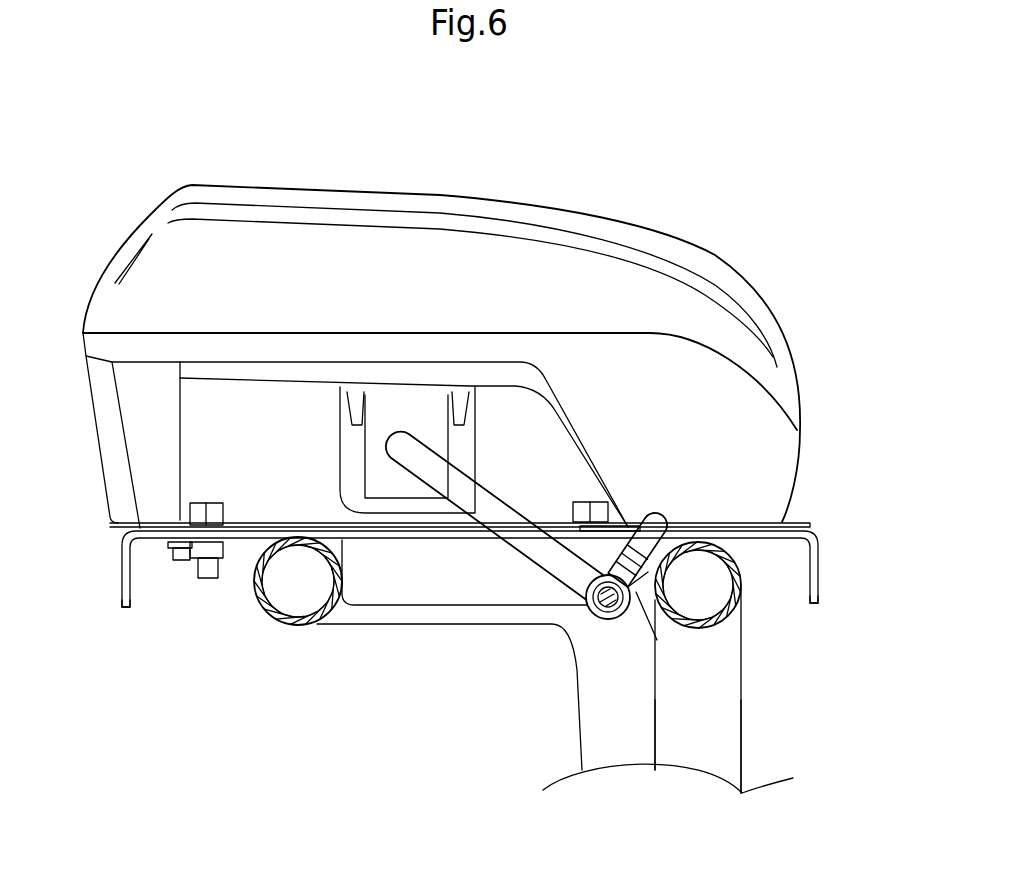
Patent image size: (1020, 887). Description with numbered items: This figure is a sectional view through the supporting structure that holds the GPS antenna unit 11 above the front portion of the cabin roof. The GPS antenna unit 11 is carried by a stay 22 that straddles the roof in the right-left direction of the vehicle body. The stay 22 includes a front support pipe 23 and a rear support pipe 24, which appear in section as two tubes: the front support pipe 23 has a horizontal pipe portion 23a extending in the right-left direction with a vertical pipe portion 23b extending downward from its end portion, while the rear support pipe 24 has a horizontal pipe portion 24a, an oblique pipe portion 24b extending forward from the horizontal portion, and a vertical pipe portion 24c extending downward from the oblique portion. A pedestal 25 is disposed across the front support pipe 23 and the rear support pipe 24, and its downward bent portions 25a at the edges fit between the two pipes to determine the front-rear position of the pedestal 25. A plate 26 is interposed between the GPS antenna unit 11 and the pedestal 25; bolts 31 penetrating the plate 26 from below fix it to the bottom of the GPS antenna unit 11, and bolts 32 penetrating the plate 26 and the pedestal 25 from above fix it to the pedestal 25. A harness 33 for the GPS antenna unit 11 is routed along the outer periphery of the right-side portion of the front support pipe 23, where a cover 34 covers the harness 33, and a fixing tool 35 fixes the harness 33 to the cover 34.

The GPS antenna unit 11 is at (385, 245).
The stay 22 is at (768, 724).
The front support pipe 23 is at (755, 702).
The horizontal pipe portion 23a is at (707, 583).
The vertical pipe portion 23b is at (690, 757).
The rear support pipe 24 is at (414, 655).
The horizontal pipe portion 24a is at (303, 597).
The oblique pipe portion 24b is at (430, 617).
The vertical pipe portion 24c is at (598, 742).
The pedestal 25 is at (110, 556).
The bent portion 25a is at (121, 581).
The plate 26 is at (800, 520).
The bolt 31 is at (180, 560).
The bolt 32 is at (216, 505).
The harness 33 is at (490, 507).
The cover 34 is at (623, 522).
The fixing tool 35 is at (658, 518).